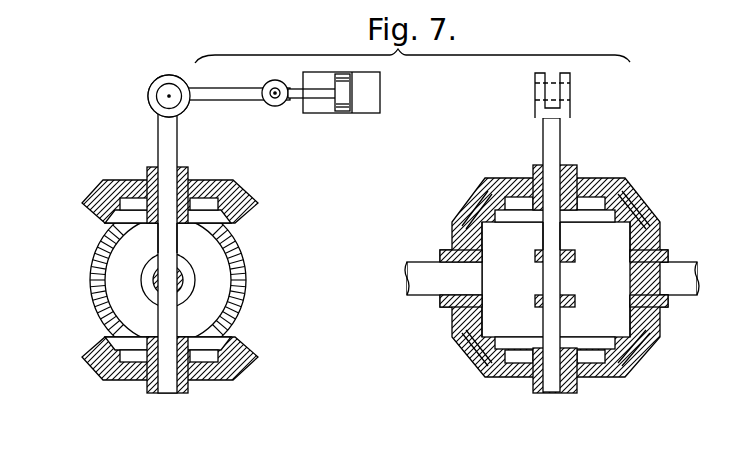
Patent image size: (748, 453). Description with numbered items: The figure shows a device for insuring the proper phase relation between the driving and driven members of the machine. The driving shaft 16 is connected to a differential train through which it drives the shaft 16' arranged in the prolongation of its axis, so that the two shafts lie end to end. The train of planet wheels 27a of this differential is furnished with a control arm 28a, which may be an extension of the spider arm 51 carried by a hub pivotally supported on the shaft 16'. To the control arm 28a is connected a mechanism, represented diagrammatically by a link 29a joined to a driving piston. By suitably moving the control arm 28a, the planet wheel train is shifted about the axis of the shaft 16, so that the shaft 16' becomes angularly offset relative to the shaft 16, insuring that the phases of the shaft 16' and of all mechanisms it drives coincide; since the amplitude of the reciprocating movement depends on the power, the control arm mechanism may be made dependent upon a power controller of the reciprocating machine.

The shaft 16 is at (443, 296).
The shaft 16' is at (397, 280).
The train of planet wheels 27a is at (646, 189).
The control arm 28a is at (178, 138).
The link 29a is at (218, 92).
The spider arm 51 is at (167, 238).